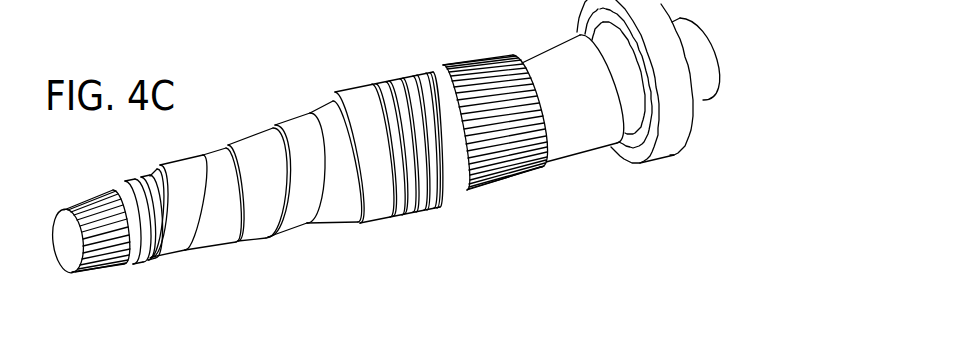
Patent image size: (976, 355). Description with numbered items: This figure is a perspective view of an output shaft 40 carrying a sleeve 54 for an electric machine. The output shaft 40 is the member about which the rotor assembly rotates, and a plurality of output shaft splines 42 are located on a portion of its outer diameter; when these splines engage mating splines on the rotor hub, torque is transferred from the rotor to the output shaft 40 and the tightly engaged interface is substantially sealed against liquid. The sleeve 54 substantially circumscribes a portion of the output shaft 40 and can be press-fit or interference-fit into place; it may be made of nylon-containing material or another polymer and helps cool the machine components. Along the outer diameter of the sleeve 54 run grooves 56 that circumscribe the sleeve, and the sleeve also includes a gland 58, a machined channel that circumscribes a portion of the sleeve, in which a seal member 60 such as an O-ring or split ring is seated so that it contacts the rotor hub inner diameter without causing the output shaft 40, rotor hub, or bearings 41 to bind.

The output shaft 40 is at (58, 234).
The bearings 41 is at (671, 150).
The output shaft splines 42 is at (489, 74).
The sleeve 54 is at (371, 88).
The grooves 56 is at (423, 217).
The gland 58 is at (403, 66).
The seal member 60 is at (437, 215).